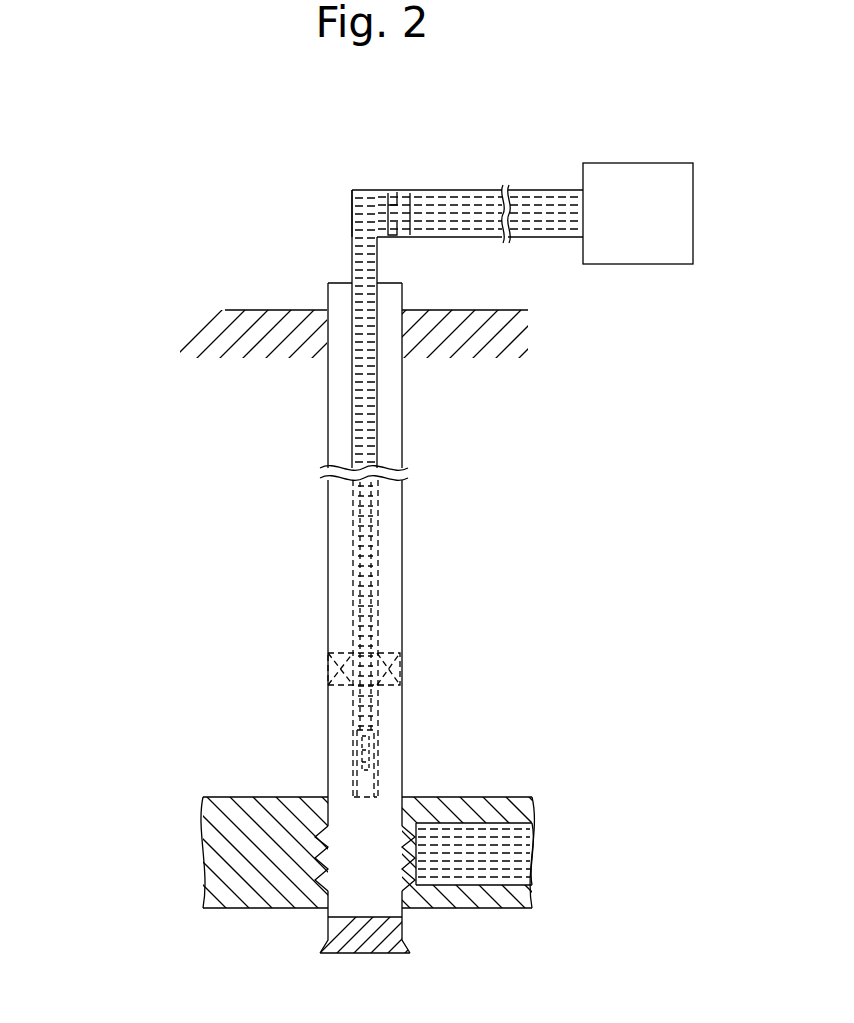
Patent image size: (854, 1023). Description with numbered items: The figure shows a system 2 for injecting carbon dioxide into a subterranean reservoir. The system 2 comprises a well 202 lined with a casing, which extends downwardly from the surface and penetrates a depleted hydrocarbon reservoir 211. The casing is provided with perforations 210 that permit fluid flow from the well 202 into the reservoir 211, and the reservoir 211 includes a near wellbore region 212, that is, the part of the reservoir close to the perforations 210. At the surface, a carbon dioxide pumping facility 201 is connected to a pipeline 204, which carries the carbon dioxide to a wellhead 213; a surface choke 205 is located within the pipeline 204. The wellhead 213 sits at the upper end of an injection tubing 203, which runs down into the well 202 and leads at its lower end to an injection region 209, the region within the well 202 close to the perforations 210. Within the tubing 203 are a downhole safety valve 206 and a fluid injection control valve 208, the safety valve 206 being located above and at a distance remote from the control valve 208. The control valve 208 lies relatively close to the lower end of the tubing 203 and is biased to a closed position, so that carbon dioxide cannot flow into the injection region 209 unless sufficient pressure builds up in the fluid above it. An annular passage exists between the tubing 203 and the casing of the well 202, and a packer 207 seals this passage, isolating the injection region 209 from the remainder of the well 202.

The system 2 is at (458, 537).
The CO2 pumping facility 201 is at (635, 230).
The well 202 is at (335, 577).
The injection tubing 203 is at (350, 435).
The pipeline 204 is at (453, 190).
The surface choke 205 is at (402, 190).
The downhole safety valve 206 is at (350, 370).
The packer 207 is at (337, 670).
The fluid injection control valve 208 is at (357, 752).
The injection region 209 is at (368, 837).
The perforations 210 is at (417, 858).
The depleted hydrocarbon reservoir 211 is at (237, 838).
The near wellbore region 212 is at (263, 868).
The wellhead 213 is at (338, 200).